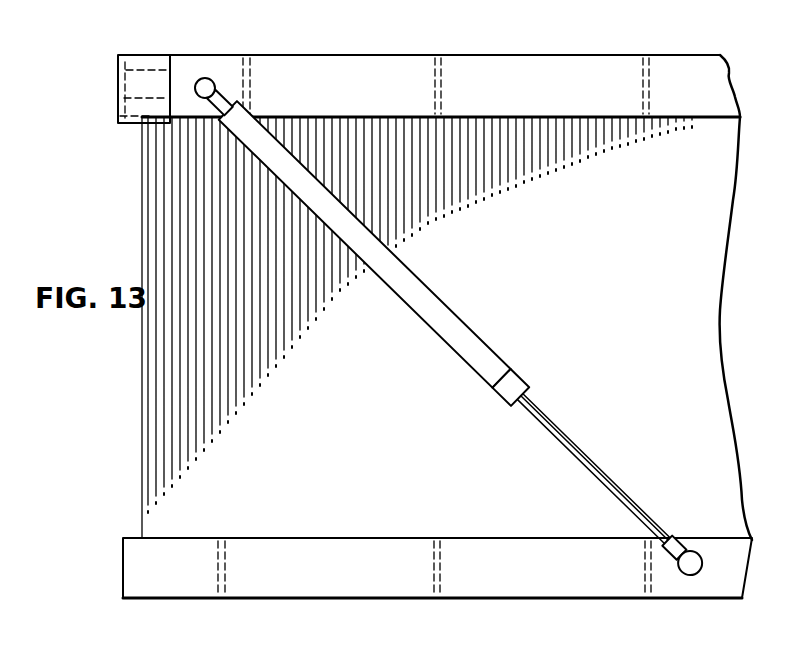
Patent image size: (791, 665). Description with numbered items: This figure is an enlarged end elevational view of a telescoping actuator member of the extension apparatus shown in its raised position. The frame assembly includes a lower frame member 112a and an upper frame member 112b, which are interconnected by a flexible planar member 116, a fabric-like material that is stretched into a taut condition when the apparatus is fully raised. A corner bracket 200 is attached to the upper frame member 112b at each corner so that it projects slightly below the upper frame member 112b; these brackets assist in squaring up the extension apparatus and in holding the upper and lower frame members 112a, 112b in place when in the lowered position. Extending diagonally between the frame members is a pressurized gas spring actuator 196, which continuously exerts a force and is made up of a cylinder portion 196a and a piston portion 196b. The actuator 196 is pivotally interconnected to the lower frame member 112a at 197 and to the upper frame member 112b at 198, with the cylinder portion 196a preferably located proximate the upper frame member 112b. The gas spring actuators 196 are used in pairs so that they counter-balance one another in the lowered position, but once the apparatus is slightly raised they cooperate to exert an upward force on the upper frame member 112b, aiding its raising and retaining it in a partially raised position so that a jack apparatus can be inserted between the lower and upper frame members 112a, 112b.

The lower frame member 112a is at (355, 602).
The upper frame member 112b is at (356, 54).
The flexible planar member 116 is at (352, 431).
The pressurized gas spring actuator 196 is at (455, 328).
The cylinder portion 196a is at (374, 253).
The piston portion 196b is at (600, 476).
The pivotal interconnection to lower frame member 197 is at (690, 563).
The pivotal interconnection to upper frame member 198 is at (213, 96).
The corner bracket 200 is at (139, 60).